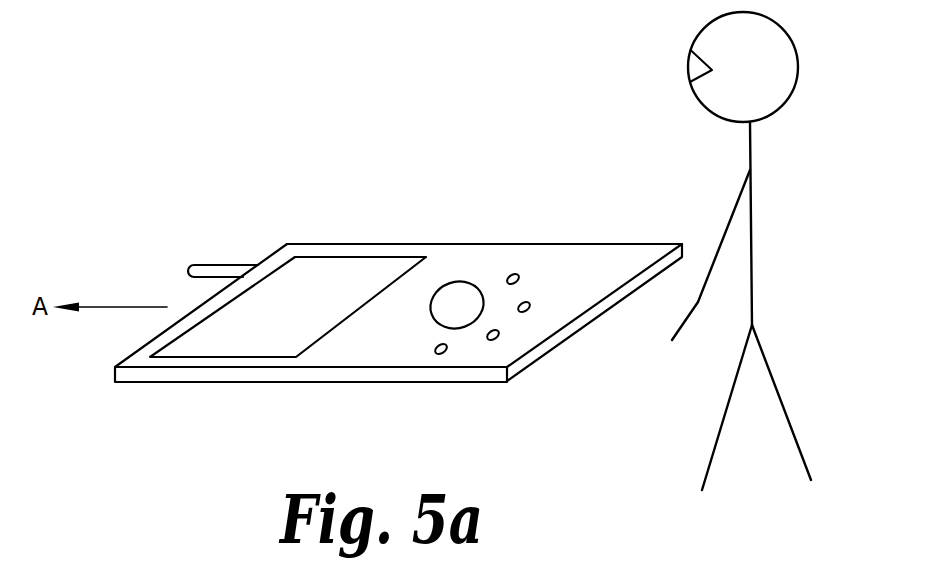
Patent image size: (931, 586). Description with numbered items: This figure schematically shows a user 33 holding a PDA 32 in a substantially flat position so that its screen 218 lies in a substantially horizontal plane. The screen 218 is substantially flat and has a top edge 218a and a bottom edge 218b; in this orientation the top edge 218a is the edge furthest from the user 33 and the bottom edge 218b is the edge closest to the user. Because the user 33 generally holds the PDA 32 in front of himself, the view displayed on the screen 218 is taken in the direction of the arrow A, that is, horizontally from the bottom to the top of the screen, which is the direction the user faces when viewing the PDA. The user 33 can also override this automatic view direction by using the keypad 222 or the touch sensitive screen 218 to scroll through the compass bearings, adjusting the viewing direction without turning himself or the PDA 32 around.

The PDA 32 is at (485, 268).
The user 33 is at (752, 265).
The screen 218 is at (262, 338).
The top edge 218a is at (170, 342).
The bottom edge 218b is at (337, 325).
The keypad 222 is at (512, 324).